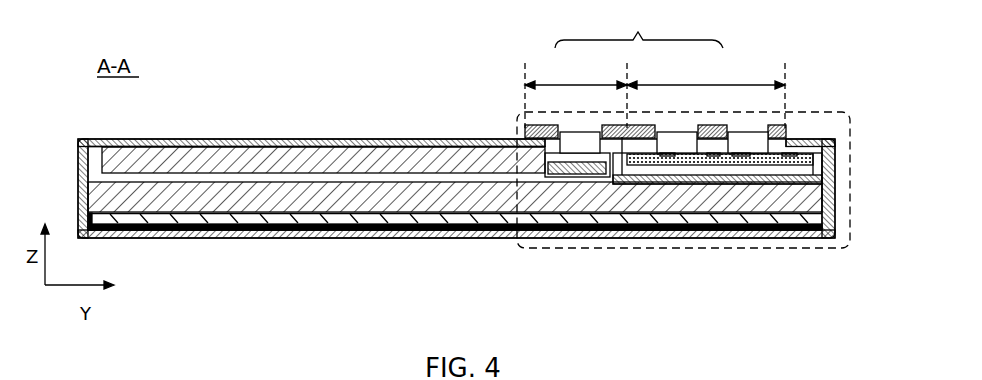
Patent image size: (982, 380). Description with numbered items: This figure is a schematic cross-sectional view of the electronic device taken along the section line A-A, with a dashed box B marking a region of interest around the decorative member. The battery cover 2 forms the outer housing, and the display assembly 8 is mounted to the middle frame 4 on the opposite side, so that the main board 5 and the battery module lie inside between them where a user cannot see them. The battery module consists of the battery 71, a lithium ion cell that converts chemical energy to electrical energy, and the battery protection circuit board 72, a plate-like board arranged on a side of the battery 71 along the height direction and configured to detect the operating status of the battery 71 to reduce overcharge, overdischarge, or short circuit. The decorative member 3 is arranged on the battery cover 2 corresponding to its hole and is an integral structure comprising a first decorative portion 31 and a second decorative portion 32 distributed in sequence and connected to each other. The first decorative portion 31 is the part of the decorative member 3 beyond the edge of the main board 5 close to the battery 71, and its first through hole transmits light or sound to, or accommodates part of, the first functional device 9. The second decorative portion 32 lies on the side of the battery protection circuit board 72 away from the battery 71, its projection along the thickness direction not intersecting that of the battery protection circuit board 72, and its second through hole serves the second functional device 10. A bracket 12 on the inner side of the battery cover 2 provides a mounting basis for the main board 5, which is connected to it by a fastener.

The battery cover 2 is at (230, 139).
The battery 71 is at (340, 163).
The middle frame 4 is at (190, 198).
The display assembly 8 is at (243, 235).
The battery protection circuit board 72 is at (585, 172).
The main board 5 is at (667, 168).
The bracket 12 is at (720, 178).
The second functional device 10 is at (670, 148).
The first functional device 9 is at (580, 143).
The decorative member 3 is at (655, 66).
The first decorative portion 31 is at (576, 71).
The second decorative portion 32 is at (706, 71).
The enlarged region B is at (808, 113).